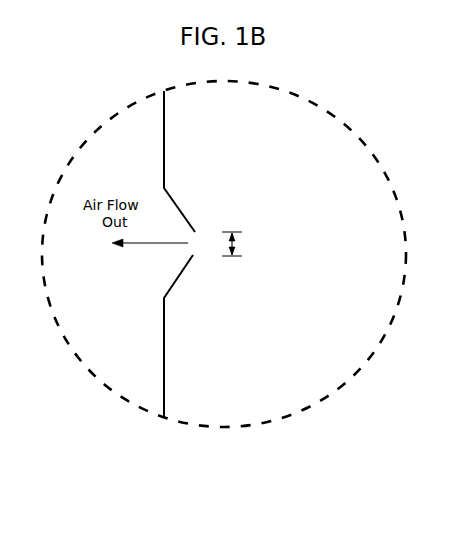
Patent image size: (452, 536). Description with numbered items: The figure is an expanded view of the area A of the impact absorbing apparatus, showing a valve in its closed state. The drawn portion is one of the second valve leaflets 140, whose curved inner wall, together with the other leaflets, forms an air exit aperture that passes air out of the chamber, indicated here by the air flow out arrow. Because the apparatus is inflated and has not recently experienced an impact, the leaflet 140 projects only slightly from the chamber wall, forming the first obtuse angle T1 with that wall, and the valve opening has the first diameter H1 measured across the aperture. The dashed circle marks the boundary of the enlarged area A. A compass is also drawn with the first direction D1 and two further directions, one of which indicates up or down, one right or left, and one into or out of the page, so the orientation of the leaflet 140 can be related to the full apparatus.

The second valve leaflet 140 is at (185, 282).
The area A is at (148, 93).
The first diameter H1 is at (228, 232).
The first obtuse angle T1 is at (183, 200).
The first direction D1 is at (89, 396).